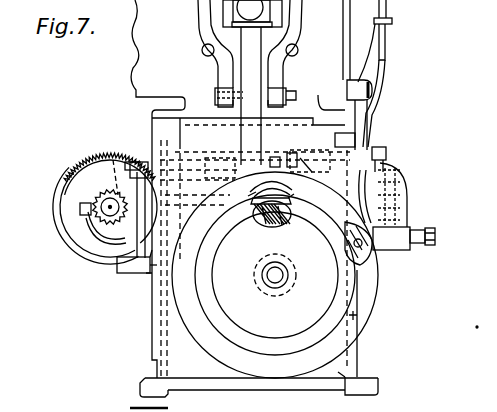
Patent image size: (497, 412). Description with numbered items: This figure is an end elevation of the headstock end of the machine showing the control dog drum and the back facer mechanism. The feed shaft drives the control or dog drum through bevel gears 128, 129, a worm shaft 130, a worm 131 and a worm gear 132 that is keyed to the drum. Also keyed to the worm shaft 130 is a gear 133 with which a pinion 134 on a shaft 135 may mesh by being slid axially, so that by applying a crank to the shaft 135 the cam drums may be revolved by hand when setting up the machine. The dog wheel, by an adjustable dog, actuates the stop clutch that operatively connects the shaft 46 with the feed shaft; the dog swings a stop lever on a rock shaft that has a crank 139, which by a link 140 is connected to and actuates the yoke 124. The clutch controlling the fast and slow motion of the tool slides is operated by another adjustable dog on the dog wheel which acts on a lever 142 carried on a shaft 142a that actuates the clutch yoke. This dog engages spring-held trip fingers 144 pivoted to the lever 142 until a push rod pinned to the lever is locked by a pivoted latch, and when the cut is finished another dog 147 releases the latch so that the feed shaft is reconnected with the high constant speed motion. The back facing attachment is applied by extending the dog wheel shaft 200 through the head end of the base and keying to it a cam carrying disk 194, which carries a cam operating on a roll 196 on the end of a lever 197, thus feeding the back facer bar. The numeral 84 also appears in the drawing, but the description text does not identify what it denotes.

The pivot pin 84 is at (77, 155).
The bevel gear 128 is at (118, 154).
The crank 139 is at (143, 162).
The shaft 46 is at (68, 198).
The yoke 124 is at (78, 222).
The dog 147 is at (84, 237).
The bevel gear 129 is at (89, 262).
The link 140 is at (141, 277).
The lever 197 is at (239, 118).
The shaft 142a is at (208, 160).
The roll 196 is at (310, 155).
The lever 142 is at (375, 147).
The gear 133 is at (410, 184).
The pinion 134 is at (413, 228).
The shaft 135 is at (425, 243).
The trip fingers 144 is at (372, 265).
The dog wheel shaft 200 is at (280, 277).
The cam carrying disk 194 is at (275, 275).
The worm shaft 130 is at (248, 226).
The worm 131 is at (259, 226).
The worm gear 132 is at (285, 227).